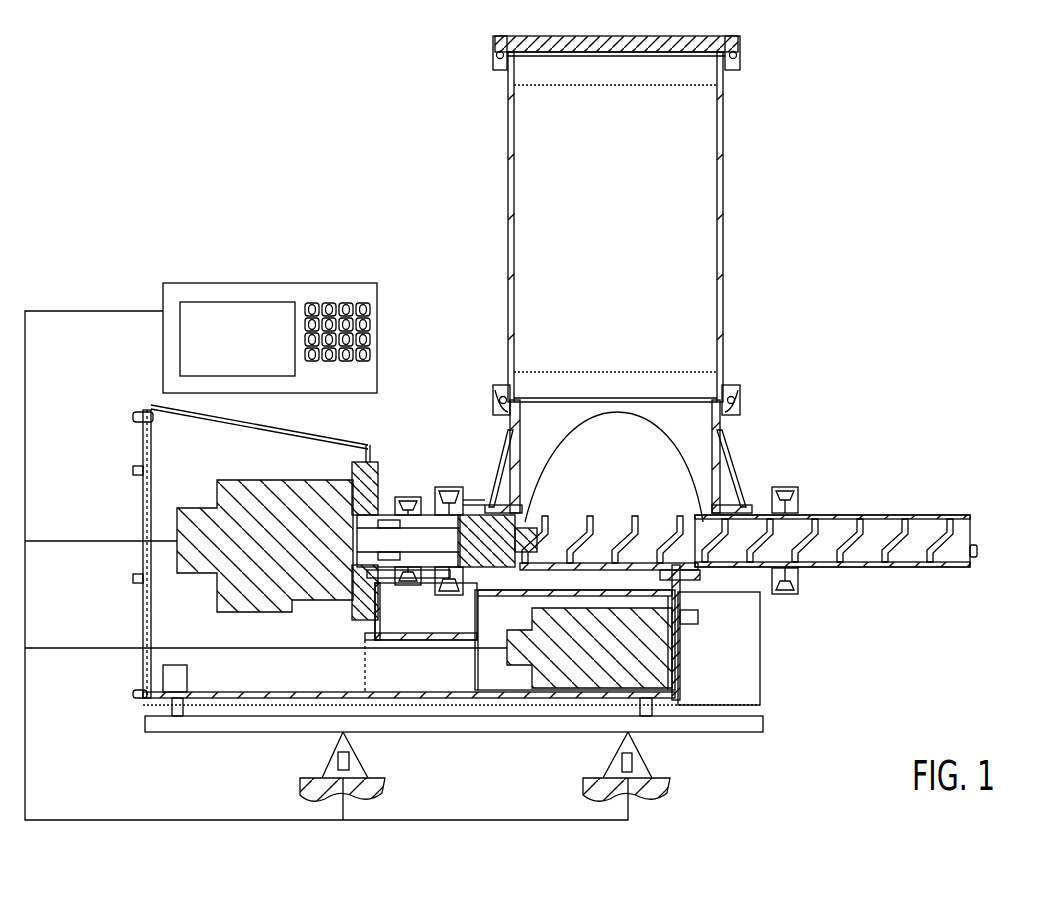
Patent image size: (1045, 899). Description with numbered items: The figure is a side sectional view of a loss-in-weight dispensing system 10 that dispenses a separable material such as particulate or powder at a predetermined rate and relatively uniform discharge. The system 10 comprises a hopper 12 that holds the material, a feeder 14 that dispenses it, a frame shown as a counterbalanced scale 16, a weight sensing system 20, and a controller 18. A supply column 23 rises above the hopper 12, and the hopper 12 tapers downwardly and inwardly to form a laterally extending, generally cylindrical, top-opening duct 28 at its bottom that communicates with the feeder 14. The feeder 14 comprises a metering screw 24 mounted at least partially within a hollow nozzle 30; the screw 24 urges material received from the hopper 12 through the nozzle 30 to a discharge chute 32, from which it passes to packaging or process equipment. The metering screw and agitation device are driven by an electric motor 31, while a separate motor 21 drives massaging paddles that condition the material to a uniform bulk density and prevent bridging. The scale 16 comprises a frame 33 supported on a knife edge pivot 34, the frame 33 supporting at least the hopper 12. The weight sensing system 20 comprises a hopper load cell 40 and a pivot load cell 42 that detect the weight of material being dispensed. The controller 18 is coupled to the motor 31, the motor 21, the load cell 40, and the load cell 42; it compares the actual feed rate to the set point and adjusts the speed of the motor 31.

The loss-in-weight dispensing system 10 is at (365, 182).
The hopper 12 is at (722, 470).
The feeder 14 is at (931, 617).
The counterbalanced scale 16 is at (150, 748).
The controller 18 is at (265, 283).
The weight sensing system 20 is at (275, 792).
The motor 21 is at (507, 657).
The supply column 23 is at (725, 98).
The metering screw 24 is at (677, 515).
The duct 28 is at (611, 517).
The nozzle 30 is at (888, 514).
The electric motor 31 is at (237, 480).
The discharge chute 32 is at (973, 529).
The frame 33 is at (497, 733).
The knife edge pivot 34 is at (337, 745).
The hopper load cell 40 is at (632, 765).
The pivot load cell 42 is at (350, 758).